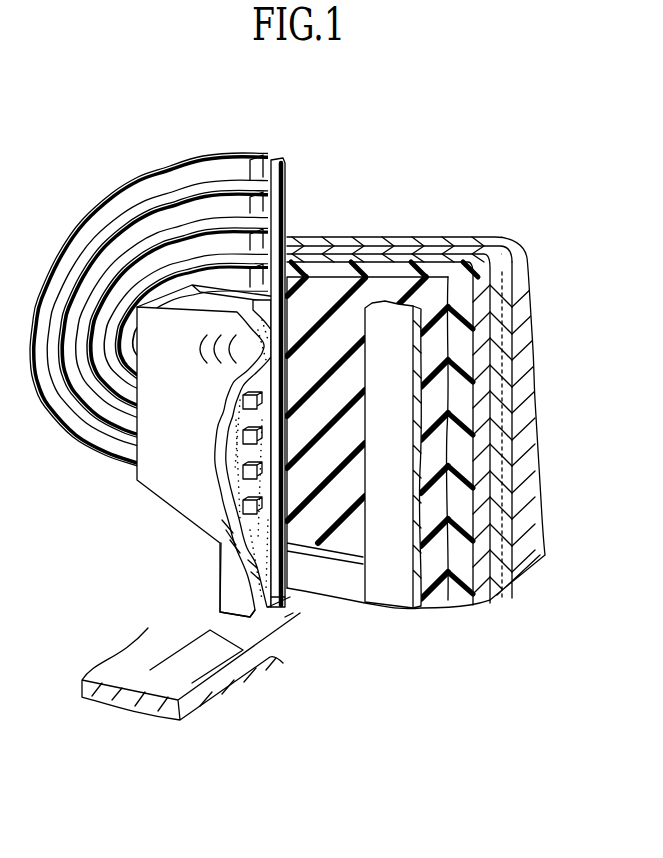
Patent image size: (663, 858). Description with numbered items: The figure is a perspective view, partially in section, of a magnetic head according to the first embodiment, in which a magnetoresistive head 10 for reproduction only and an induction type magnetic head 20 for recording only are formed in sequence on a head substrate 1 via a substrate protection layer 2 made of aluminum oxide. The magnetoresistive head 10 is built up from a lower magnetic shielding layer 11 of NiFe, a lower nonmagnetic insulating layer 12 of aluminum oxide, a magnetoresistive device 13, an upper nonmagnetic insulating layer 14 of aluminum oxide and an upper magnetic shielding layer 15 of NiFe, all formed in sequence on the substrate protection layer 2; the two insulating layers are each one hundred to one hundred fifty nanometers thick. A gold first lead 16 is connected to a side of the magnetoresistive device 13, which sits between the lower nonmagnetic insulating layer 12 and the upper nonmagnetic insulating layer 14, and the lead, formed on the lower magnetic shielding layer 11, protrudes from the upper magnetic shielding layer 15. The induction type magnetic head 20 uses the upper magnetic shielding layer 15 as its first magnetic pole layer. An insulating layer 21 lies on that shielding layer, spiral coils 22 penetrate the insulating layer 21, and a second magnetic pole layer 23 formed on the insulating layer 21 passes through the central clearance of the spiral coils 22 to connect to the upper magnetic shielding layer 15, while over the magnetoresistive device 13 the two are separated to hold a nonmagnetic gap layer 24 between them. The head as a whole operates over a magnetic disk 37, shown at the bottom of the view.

The head substrate 1 is at (527, 403).
The substrate protection layer 2 is at (497, 447).
The magnetoresistive (MR) head 10 is at (352, 622).
The lower magnetic shielding layer 11 is at (480, 307).
The lower nonmagnetic insulating layer 12 is at (427, 297).
The magnetoresistive device 13 is at (353, 583).
The upper nonmagnetic insulating layer 14 is at (283, 192).
The upper magnetic shielding layer 15 is at (315, 295).
The first lead 16 is at (473, 536).
The induction type magnetic head 20 is at (208, 550).
The insulating layer 21 is at (233, 436).
The spiral coils 22 is at (212, 172).
The second magnetic pole layer 23 is at (172, 478).
The nonmagnetic gap layer 24 is at (293, 590).
The magnetic disk 37 is at (103, 692).